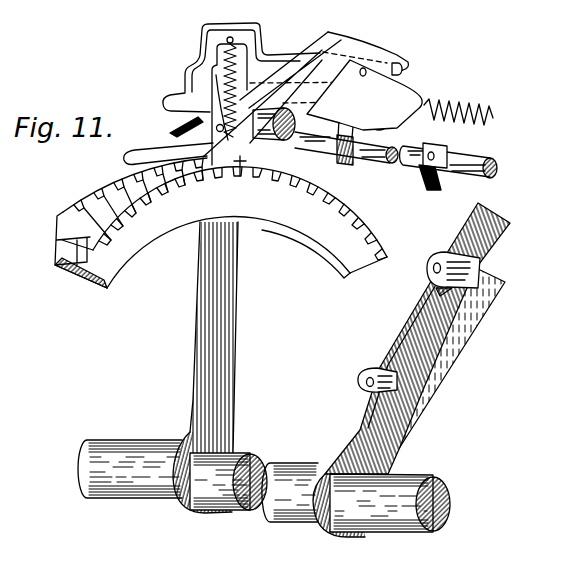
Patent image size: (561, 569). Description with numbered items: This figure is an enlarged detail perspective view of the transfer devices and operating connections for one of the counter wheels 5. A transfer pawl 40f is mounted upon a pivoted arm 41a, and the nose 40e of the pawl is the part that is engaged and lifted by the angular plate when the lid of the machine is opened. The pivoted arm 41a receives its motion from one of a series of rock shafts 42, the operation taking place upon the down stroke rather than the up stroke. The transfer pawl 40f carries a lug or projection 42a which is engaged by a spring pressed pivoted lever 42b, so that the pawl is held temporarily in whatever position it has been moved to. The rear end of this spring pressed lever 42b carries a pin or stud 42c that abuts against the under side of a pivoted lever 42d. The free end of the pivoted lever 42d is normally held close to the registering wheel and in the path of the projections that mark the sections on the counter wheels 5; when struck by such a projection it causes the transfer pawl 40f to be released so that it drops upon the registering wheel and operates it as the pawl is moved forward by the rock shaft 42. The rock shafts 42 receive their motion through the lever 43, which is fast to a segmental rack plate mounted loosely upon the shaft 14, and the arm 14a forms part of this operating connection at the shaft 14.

The counter wheels 5 is at (221, 223).
The shaft 14 is at (250, 512).
The arm 14a is at (160, 446).
The nose 40e is at (186, 98).
The transfer pawl 40f is at (128, 151).
The pivoted arm 41a is at (258, 165).
The rock shaft 42 is at (374, 158).
The lug or projection 42a is at (200, 93).
The spring pressed pivoted lever 42b is at (200, 44).
The pin or stud 42c is at (399, 70).
The pivoted lever 42d is at (406, 62).
The lever 43 is at (477, 335).